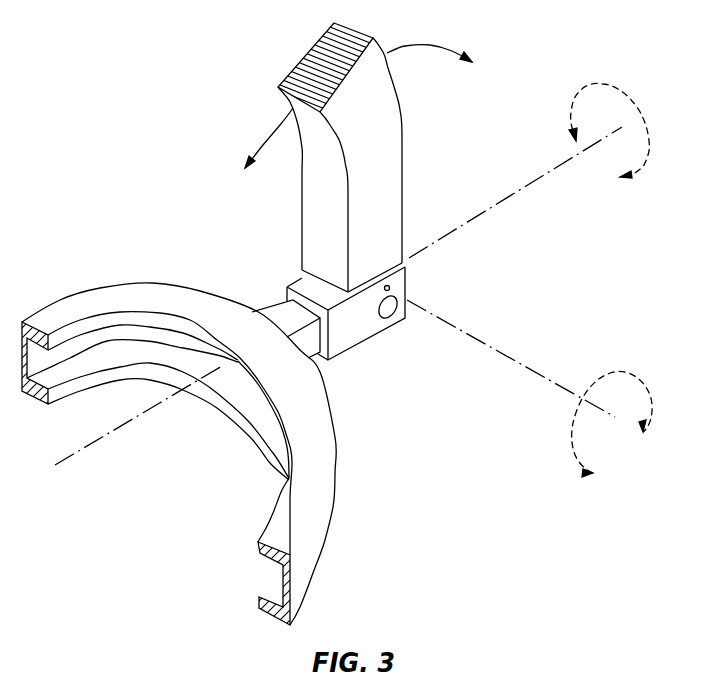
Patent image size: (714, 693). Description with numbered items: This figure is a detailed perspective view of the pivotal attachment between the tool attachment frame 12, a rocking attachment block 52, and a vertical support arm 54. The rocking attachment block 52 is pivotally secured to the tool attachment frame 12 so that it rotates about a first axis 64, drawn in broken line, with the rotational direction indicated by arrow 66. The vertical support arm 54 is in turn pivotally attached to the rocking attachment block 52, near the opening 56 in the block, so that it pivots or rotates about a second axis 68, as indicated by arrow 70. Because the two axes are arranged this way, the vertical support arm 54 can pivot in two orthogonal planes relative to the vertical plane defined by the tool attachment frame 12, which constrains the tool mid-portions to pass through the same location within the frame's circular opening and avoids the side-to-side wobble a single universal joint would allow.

The tool attachment frame 12 is at (305, 568).
The rocking attachment block 52 is at (407, 313).
The vertical support arm 54 is at (375, 108).
The aperture in mounting block 56 is at (389, 287).
The first axis 64 is at (523, 187).
The arrow 66 is at (615, 80).
The second axis 68 is at (515, 360).
The arrow 70 is at (630, 372).